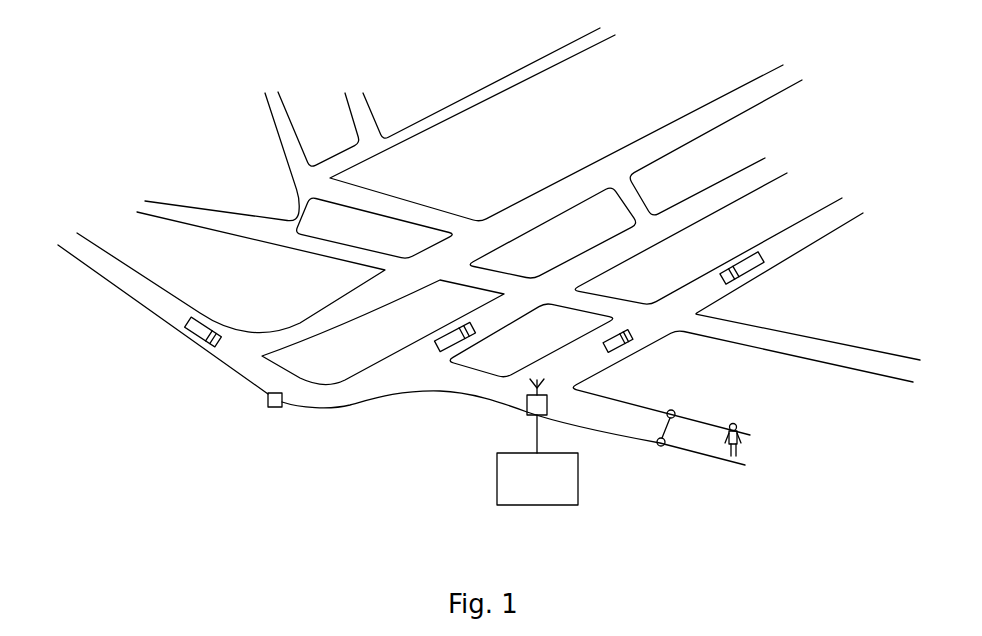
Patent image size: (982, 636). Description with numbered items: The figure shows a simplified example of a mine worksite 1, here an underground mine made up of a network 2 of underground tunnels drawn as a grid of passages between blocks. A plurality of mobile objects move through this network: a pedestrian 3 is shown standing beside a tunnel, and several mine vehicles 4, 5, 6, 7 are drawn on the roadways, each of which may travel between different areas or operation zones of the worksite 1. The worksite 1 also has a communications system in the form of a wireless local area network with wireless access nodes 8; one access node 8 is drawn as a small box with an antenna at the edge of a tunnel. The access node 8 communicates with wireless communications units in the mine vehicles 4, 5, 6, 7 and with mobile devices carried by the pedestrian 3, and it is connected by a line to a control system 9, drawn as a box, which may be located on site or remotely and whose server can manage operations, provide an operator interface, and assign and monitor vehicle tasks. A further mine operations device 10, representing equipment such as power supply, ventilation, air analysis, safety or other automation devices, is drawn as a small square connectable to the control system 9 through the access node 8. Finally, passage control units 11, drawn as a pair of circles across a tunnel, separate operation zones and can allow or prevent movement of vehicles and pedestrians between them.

The mine worksite 1 is at (384, 53).
The network of underground tunnels 2 is at (418, 205).
The pedestrian 3 is at (738, 428).
The mine vehicle 4 is at (443, 351).
The mine vehicle 5 is at (197, 333).
The mine vehicle 6 is at (745, 278).
The mine vehicle 7 is at (633, 344).
The wireless access node 8 is at (527, 410).
The control system 9 is at (529, 494).
The mine operations device 10 is at (268, 399).
The passage control unit 11 is at (677, 413).